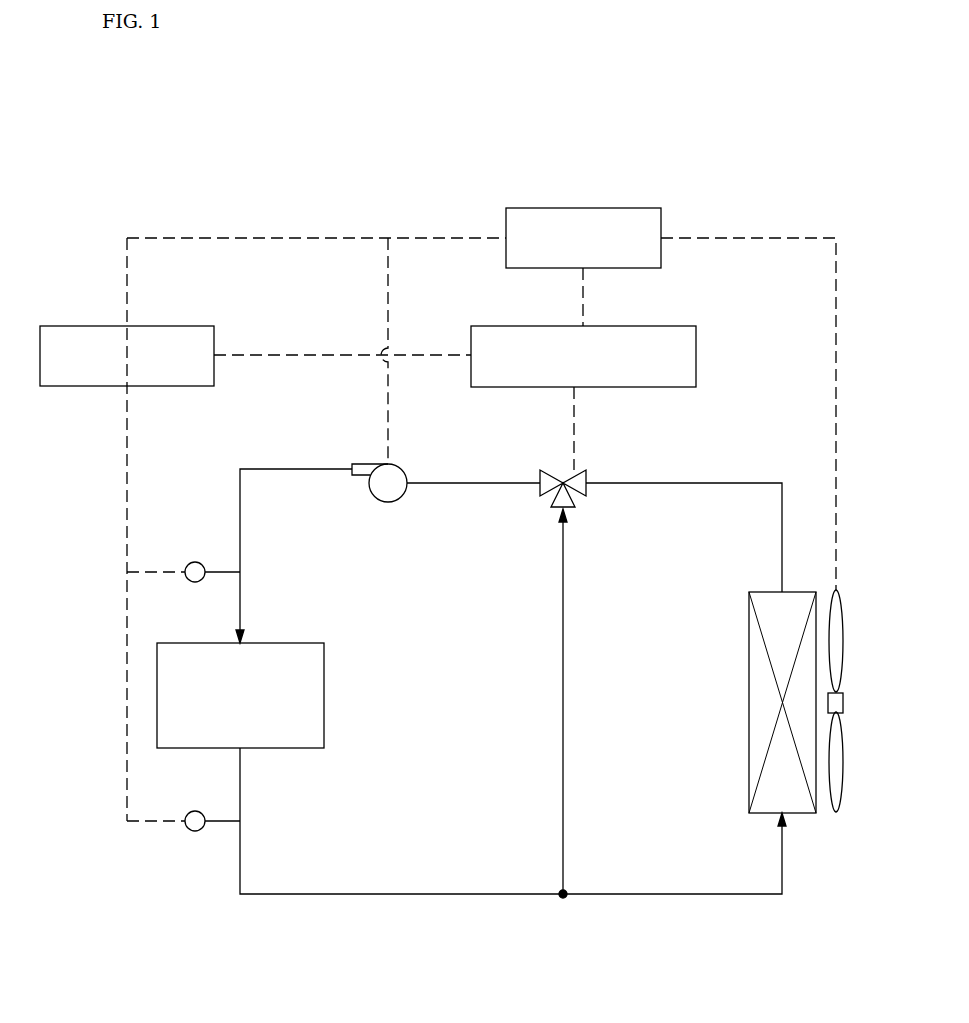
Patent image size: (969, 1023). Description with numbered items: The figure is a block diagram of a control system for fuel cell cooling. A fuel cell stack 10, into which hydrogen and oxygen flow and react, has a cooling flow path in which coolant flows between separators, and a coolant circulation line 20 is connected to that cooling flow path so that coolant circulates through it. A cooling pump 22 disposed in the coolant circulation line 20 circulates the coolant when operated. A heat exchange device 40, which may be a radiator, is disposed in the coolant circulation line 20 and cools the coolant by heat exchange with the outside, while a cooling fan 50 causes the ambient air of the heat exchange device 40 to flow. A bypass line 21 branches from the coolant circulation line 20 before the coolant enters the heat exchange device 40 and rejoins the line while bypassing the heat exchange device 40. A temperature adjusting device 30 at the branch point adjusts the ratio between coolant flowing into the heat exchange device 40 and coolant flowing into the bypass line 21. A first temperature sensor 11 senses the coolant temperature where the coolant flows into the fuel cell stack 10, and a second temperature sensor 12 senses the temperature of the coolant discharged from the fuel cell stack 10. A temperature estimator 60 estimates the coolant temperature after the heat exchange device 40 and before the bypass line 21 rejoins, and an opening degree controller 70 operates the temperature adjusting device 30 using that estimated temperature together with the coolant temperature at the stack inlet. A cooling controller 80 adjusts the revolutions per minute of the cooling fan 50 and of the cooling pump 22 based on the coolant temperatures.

The fuel cell stack 10 is at (324, 697).
The first temperature sensor 11 is at (195, 562).
The second temperature sensor 12 is at (192, 831).
The coolant circulation line 20 is at (432, 896).
The bypass line 21 is at (562, 766).
The cooling pump 22 is at (398, 500).
The temperature adjusting device 30 is at (578, 494).
The heat exchange device 40 is at (749, 705).
The cooling fan 50 is at (836, 814).
The temperature estimator 60 is at (83, 326).
The opening degree controller 70 is at (696, 356).
The cooling controller 80 is at (555, 208).